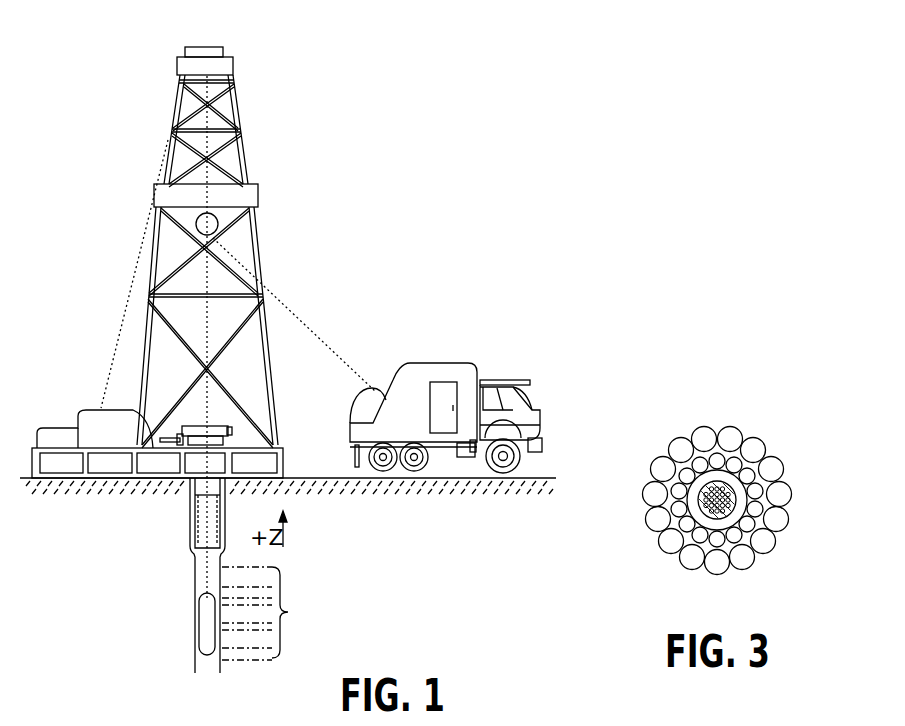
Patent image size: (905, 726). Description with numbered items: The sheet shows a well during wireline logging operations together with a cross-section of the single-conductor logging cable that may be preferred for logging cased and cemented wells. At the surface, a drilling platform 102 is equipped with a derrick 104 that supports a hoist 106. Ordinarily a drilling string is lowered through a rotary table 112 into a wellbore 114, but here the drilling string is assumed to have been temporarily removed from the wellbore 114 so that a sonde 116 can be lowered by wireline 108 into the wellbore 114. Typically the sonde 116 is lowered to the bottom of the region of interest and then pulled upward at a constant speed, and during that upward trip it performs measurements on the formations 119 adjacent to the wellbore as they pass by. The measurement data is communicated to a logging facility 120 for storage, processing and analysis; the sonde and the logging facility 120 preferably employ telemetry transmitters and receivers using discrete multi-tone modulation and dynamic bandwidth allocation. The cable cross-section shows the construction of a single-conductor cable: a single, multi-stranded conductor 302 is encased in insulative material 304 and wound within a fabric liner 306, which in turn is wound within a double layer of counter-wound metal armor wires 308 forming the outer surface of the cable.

In FIG. 1, the drilling platform 102 is at (283, 456).
In FIG. 1, the derrick 104 is at (272, 413).
In FIG. 1, the hoist 106 is at (218, 224).
In FIG. 1, the wireline 108 is at (270, 293).
In FIG. 1, the rotary table 112 is at (226, 425).
In FIG. 1, the wellbore 114 is at (193, 561).
In FIG. 1, the sonde 116 is at (202, 616).
In FIG. 1, the formations 119 is at (274, 613).
In FIG. 1, the logging facility 120 is at (410, 368).
In FIG. 3, the multi-stranded conductor 302 is at (708, 490).
In FIG. 3, the insulative material 304 is at (713, 488).
In FIG. 3, the fabric liner 306 is at (730, 473).
In FIG. 3, the metal armor wires 308 is at (775, 455).